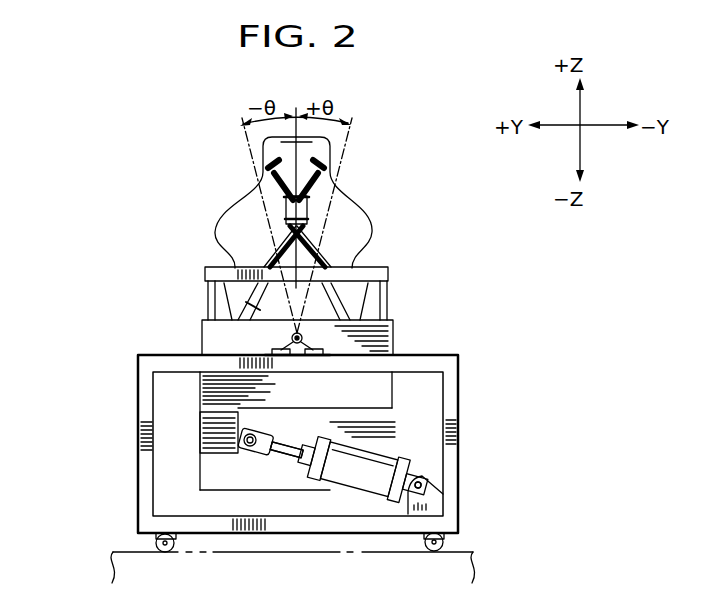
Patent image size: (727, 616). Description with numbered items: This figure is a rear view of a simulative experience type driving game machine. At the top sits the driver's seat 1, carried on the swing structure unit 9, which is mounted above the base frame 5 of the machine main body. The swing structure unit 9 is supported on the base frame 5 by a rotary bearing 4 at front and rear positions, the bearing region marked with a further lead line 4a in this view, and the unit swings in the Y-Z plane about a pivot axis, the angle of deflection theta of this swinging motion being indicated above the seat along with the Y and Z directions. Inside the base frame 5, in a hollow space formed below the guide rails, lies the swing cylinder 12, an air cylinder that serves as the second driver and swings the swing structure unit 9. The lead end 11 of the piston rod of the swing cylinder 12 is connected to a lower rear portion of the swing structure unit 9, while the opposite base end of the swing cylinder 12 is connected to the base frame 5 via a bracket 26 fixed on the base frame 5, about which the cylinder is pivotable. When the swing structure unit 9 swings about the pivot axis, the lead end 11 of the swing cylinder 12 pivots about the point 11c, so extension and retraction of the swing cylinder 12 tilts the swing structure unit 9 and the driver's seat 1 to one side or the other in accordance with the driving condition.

The driver's seat 1 is at (355, 191).
The rotary bearing 4 is at (300, 343).
The pivot shaft 4a is at (302, 337).
The base frame 5 is at (358, 524).
The swing structure unit 9 is at (383, 422).
The lead end of piston rod 11 is at (260, 453).
The pivot point 11c is at (246, 442).
The swing cylinder 12 is at (358, 460).
The bracket 26 is at (424, 478).